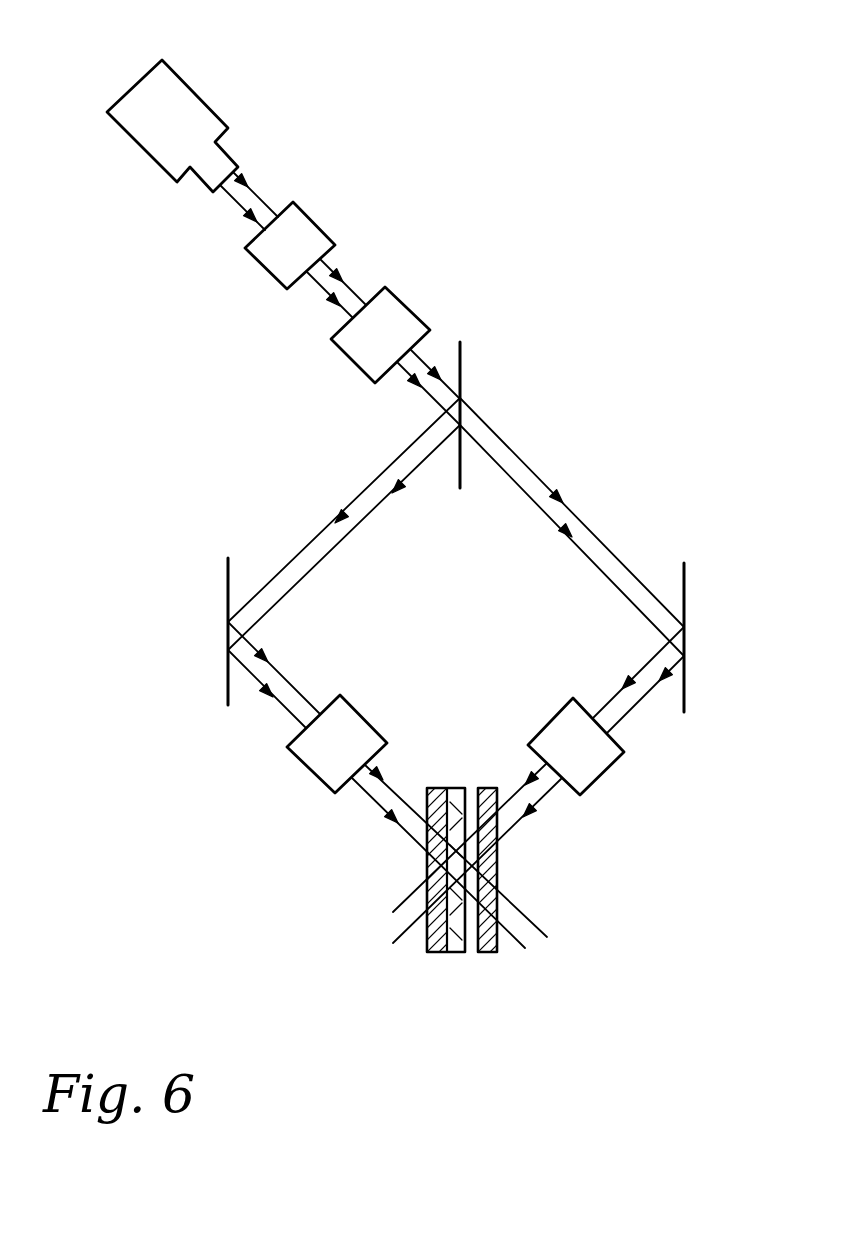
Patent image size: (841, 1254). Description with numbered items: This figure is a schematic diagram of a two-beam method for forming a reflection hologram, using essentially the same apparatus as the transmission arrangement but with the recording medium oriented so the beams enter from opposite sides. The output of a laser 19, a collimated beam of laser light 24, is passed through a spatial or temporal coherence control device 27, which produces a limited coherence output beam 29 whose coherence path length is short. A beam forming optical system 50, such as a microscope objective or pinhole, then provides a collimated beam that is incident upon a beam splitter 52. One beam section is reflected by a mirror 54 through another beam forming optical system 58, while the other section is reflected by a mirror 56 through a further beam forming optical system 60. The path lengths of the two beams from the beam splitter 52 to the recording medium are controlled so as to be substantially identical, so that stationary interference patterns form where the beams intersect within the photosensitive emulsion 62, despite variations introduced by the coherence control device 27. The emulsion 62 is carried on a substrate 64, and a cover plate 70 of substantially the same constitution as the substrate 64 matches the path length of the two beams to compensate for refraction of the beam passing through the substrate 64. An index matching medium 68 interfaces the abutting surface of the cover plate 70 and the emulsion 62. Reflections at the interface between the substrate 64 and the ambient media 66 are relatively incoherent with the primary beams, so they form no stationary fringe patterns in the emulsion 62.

The laser 19 is at (185, 122).
The collimated beam of laser light 24 is at (253, 192).
The coherence control device 27 is at (296, 260).
The output beam 29 is at (350, 287).
The beam forming optical system 50 is at (385, 343).
The beam splitter 52 is at (462, 362).
The mirror 54 is at (228, 590).
The mirror 56 is at (687, 583).
The beam forming optical system 58 is at (327, 760).
The beam forming optical system 60 is at (593, 757).
The photosensitive emulsion 62 is at (457, 953).
The substrate 64 is at (425, 947).
The ambient media 66 is at (290, 975).
The index matching medium 68 is at (472, 953).
The cover plate 70 is at (497, 938).